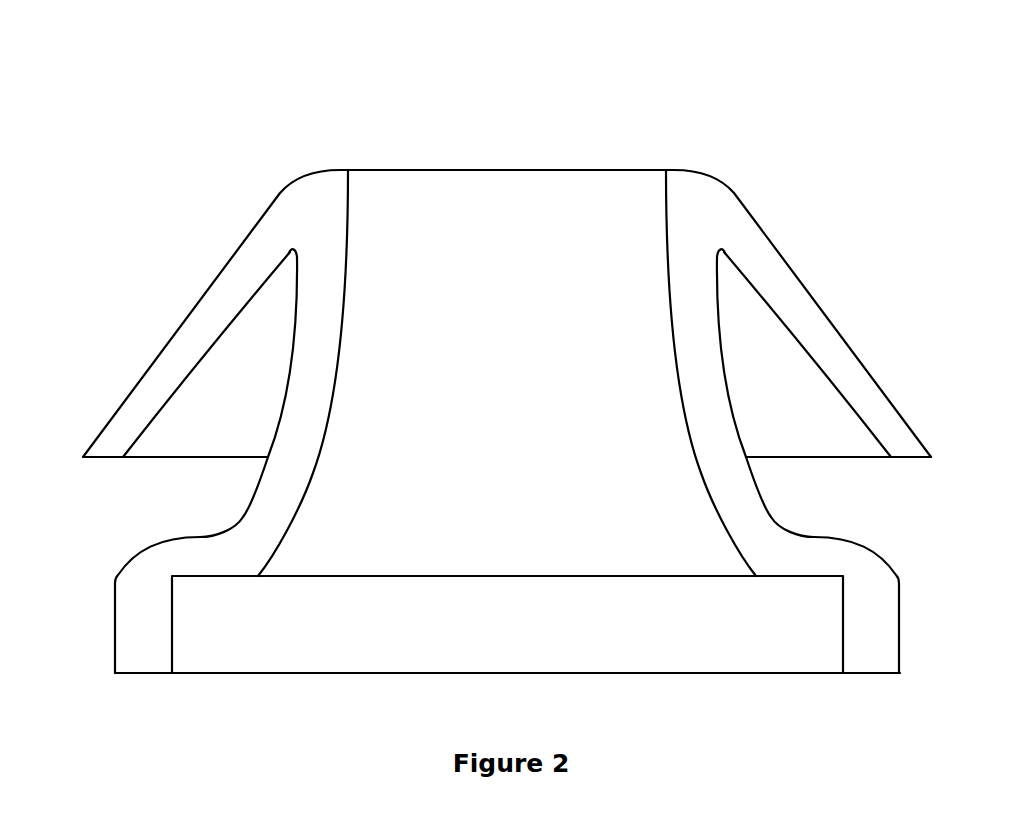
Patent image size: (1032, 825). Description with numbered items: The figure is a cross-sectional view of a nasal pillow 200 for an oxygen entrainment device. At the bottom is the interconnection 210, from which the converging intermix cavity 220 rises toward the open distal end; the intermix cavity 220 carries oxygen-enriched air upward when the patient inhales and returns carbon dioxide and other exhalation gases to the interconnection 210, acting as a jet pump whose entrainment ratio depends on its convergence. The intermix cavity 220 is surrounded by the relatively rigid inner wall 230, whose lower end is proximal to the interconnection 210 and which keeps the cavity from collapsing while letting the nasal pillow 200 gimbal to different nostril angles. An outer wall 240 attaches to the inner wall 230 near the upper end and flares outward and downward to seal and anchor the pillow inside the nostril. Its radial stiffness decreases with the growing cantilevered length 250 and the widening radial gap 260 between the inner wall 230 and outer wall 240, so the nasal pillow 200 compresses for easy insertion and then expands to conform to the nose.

The nasal pillow 200 is at (670, 78).
The interconnection 210 is at (255, 675).
The intermix cavity 220 is at (505, 170).
The inner wall 230 is at (113, 589).
The outer wall 240 is at (155, 345).
The cantilevered length 250 is at (302, 148).
The radial gap 260 is at (277, 403).